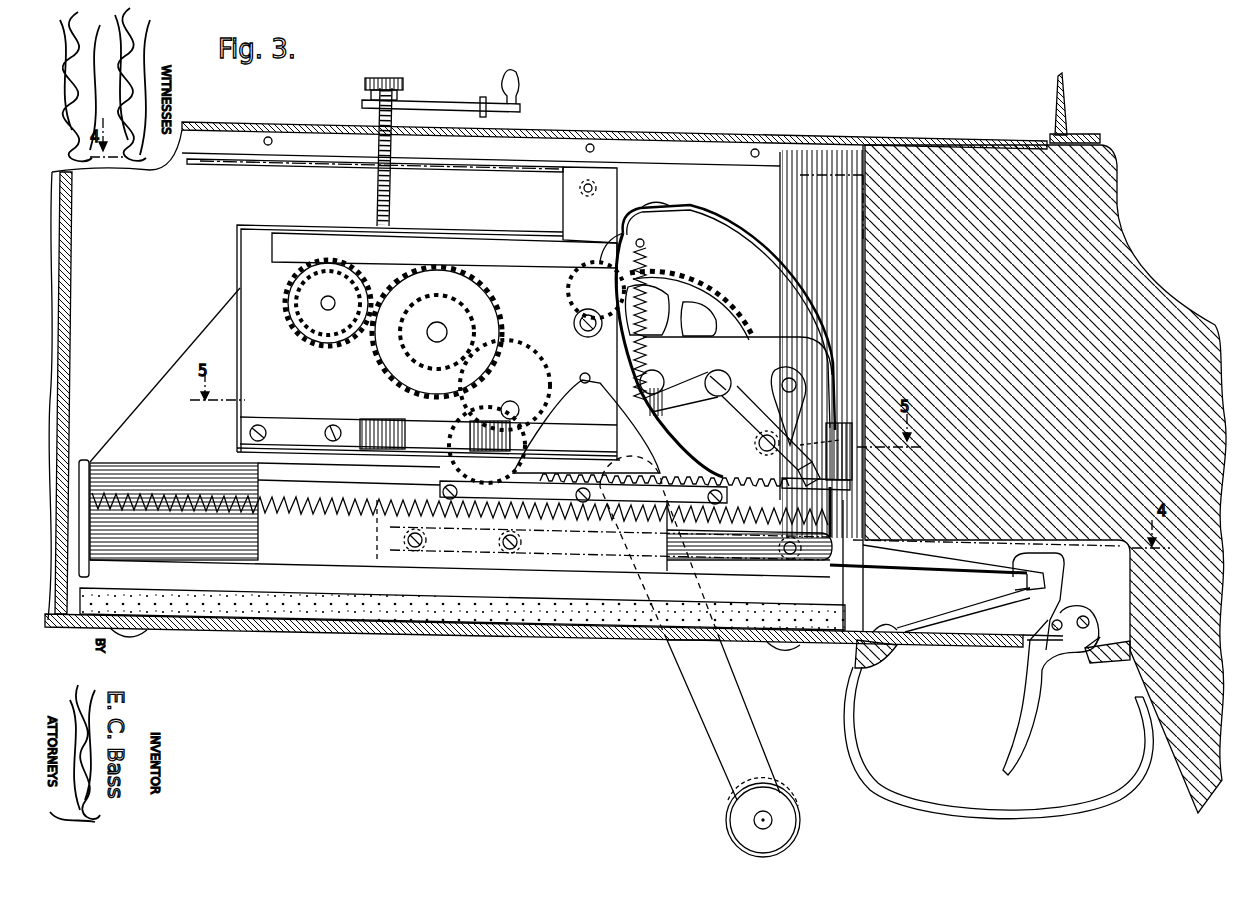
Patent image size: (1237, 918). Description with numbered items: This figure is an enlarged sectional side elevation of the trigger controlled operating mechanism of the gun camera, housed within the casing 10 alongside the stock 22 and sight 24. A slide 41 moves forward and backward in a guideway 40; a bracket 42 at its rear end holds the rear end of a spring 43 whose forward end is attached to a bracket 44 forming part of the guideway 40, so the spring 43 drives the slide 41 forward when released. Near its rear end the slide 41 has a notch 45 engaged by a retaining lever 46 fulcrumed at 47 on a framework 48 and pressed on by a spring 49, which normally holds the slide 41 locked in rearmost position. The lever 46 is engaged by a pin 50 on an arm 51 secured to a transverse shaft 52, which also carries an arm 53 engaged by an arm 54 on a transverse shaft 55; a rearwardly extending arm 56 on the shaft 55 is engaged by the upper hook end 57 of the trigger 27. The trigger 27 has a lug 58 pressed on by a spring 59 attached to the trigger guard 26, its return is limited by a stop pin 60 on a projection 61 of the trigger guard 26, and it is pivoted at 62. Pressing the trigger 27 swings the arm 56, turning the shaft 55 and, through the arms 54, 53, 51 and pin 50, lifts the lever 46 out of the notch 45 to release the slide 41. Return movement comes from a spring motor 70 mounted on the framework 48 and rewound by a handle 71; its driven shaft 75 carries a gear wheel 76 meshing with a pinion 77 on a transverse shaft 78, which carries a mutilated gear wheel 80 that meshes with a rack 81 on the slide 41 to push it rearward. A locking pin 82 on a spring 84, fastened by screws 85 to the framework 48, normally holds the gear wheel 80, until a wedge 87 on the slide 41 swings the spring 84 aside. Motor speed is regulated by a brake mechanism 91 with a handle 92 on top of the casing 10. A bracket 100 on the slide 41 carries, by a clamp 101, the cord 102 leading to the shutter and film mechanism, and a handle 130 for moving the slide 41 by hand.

The casing 10 is at (720, 170).
The stock 22 is at (1085, 215).
The rear sight 24 is at (1064, 88).
The trigger guard 26 is at (1108, 800).
The trigger 27 is at (1030, 694).
The guideway 40 is at (206, 485).
The slide 41 is at (417, 470).
The bracket 42 is at (832, 510).
The spring 43 is at (347, 506).
The bracket 44 is at (85, 462).
The notch 45 is at (803, 463).
The retaining lever 46 is at (752, 414).
The fulcrum 47 is at (721, 370).
The framework 48 is at (243, 287).
The spring 49 is at (646, 345).
The pin 50 is at (760, 451).
The arm 51 is at (778, 372).
The transverse shaft 52 is at (791, 377).
The arm 53 is at (800, 412).
The arm 54 is at (780, 515).
The transverse shaft 55 is at (786, 560).
The rearwardly extending arm 56 is at (893, 568).
The upper hook end 57 is at (1031, 560).
The lug 58 is at (1012, 589).
The spring 59 is at (972, 604).
The stop pin 60 is at (1060, 619).
The projection 61 is at (1100, 632).
The pivot 62 is at (1088, 615).
The motor 70 is at (708, 230).
The handle 71 is at (712, 708).
The driven shaft 75 is at (660, 386).
The gear wheel 76 is at (681, 282).
The pinion 77 is at (508, 385).
The transverse shaft 78 is at (470, 409).
The mutilated gear wheel 80 is at (450, 388).
The rack 81 is at (626, 452).
The locking pin 82 is at (530, 447).
The spring 84 is at (362, 426).
The screws 85 is at (325, 433).
The wedge 87 is at (840, 425).
The brake mechanism 91 is at (391, 197).
The handle 92 is at (432, 108).
The bracket 100 is at (563, 200).
The clamp 101 is at (596, 172).
The cord 102 is at (191, 168).
The handle 130 is at (575, 322).